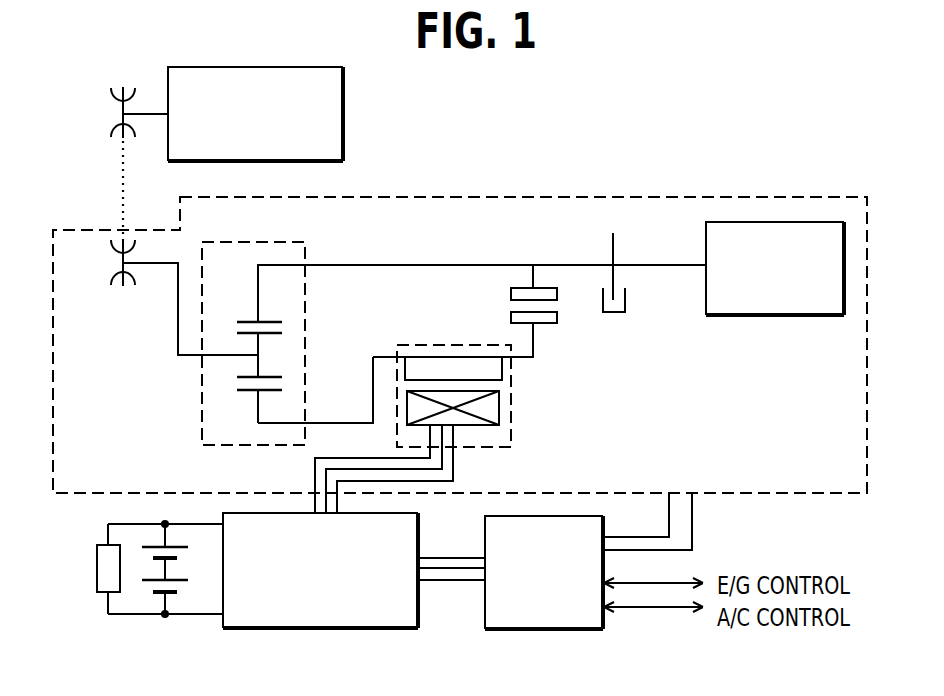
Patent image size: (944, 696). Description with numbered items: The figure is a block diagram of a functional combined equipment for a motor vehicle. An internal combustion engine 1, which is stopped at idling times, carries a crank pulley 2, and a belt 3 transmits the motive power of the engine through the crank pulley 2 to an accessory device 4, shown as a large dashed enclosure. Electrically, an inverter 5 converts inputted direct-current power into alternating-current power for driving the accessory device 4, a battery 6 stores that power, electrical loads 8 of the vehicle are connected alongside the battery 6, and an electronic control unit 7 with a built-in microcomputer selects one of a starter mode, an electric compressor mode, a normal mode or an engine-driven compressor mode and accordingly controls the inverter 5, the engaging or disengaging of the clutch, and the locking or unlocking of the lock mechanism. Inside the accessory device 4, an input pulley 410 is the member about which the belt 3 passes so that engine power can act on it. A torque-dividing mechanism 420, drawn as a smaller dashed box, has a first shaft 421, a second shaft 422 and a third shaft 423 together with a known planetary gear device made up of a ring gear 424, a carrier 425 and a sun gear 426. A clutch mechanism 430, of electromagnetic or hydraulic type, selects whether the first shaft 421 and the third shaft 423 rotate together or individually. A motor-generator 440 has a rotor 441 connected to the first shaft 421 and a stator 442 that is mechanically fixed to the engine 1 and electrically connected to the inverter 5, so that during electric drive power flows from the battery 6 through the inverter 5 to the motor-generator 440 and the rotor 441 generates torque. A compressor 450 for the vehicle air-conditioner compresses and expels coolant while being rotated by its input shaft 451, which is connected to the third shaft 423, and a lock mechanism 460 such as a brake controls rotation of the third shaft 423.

The internal combustion engine 1 is at (298, 67).
The crank pulley 2 is at (112, 92).
The belt 3 is at (122, 188).
The accessory device 4 is at (490, 197).
The inverter 5 is at (322, 628).
The battery 6 is at (155, 546).
The electronic control unit 7 is at (540, 628).
The electrical loads 8 is at (107, 568).
The input pulley 410 is at (120, 283).
The torque-dividing mechanism 420 is at (285, 240).
The first shaft 421 is at (337, 422).
The second shaft 422 is at (188, 357).
The third shaft 423 is at (340, 265).
The ring gear 424 is at (255, 392).
The carrier 425 is at (275, 328).
The sun gear 426 is at (258, 300).
The clutch mechanism 430 is at (545, 323).
The motor-generator 440 is at (490, 386).
The rotor 441 is at (443, 368).
The stator 442 is at (480, 427).
The compressor 450 is at (775, 315).
The input shaft 451 is at (638, 266).
The lock mechanism 460 is at (614, 313).